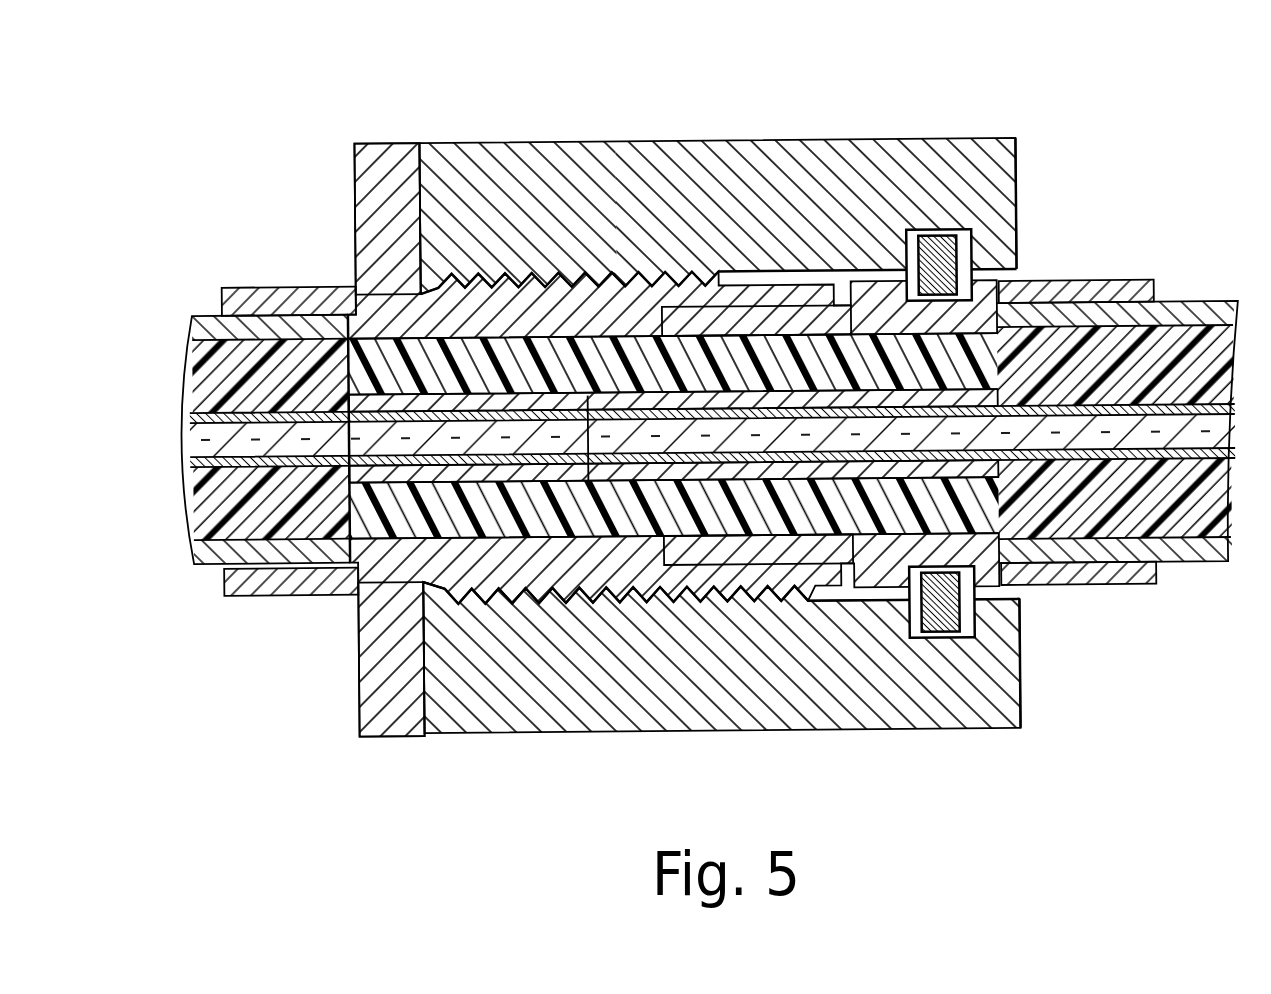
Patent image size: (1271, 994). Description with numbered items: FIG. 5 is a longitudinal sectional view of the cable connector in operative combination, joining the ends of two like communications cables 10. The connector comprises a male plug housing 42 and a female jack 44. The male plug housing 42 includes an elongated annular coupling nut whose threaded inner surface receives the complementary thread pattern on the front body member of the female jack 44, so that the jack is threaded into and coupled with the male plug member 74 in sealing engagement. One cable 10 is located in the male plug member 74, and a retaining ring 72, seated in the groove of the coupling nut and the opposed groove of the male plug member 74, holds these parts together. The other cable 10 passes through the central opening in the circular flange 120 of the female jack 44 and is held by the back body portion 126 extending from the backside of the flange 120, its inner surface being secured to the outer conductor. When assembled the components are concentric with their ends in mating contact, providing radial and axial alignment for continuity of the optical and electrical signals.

The communications cable 10 is at (1181, 301).
The male plug housing 42 is at (860, 170).
The female jack 44 is at (597, 552).
The retaining ring 72 is at (940, 260).
The male plug member 74 is at (1099, 587).
The flange 120 is at (378, 175).
The back body portion 126 is at (281, 301).